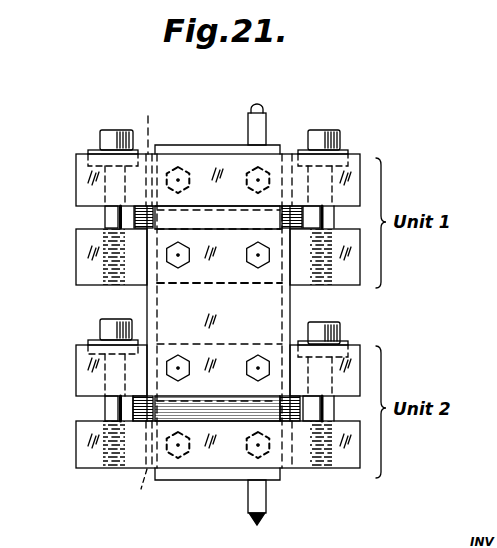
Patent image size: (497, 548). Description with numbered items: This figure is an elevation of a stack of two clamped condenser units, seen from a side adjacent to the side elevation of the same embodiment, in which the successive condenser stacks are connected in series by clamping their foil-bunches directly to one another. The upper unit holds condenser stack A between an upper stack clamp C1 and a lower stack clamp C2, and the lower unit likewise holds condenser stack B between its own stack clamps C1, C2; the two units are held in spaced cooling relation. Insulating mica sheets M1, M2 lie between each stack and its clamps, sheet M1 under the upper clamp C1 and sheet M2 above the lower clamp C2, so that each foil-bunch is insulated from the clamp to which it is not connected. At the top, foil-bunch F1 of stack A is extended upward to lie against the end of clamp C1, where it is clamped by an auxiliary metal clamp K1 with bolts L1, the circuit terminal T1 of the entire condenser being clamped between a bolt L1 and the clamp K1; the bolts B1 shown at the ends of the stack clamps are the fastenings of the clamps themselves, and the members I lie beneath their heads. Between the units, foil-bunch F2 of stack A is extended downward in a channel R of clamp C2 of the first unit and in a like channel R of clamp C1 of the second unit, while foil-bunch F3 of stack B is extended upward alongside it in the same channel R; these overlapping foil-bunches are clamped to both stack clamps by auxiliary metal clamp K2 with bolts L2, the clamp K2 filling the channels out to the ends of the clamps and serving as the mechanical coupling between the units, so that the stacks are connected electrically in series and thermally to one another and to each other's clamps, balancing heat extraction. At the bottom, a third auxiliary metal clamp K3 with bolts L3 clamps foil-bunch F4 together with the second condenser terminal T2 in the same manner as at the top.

The bolt B1 is at (118, 130).
The auxiliary metal clamp K1 is at (216, 283).
The foil-bunch F1 is at (182, 149).
The bolts L1 is at (250, 170).
The circuit terminal T1 is at (263, 116).
The insert plate under bolt head I is at (92, 150).
The stack clamp C1 is at (77, 162).
The condenser stack A is at (105, 215).
The channel R is at (125, 251).
The stack clamp C2 is at (77, 268).
The foil-bunch F2 is at (200, 204).
The mica sheet M1 is at (218, 227).
The foil-bunch F3 is at (237, 233).
The auxiliary metal clamp K2 is at (160, 294).
The bolts L2 is at (179, 259).
The condenser stack B is at (136, 411).
The mica sheet M2 is at (218, 418).
The auxiliary metal clamp K3 is at (134, 489).
The foil-bunch F4 is at (178, 479).
The lower bolt holes (lugs) L3 is at (186, 455).
The condenser terminal T2 is at (267, 501).